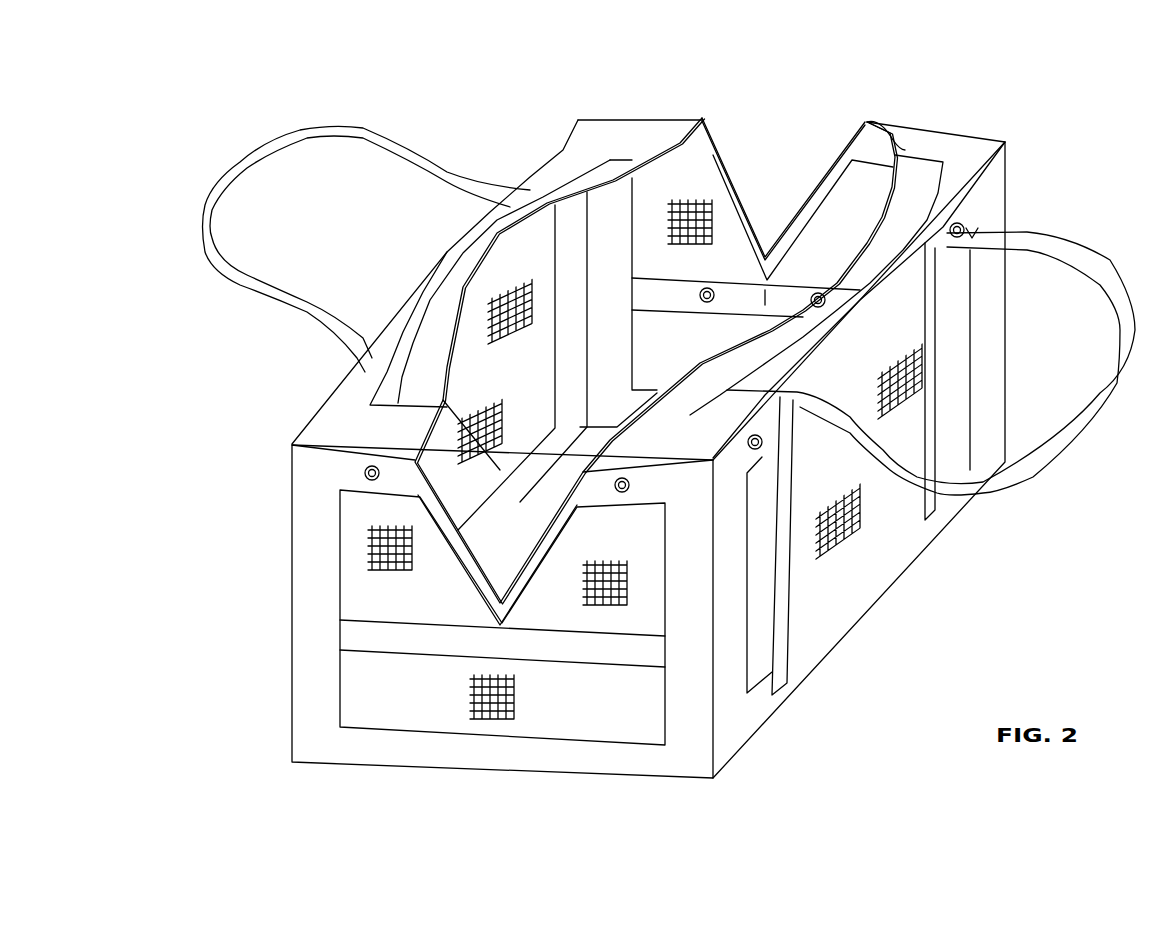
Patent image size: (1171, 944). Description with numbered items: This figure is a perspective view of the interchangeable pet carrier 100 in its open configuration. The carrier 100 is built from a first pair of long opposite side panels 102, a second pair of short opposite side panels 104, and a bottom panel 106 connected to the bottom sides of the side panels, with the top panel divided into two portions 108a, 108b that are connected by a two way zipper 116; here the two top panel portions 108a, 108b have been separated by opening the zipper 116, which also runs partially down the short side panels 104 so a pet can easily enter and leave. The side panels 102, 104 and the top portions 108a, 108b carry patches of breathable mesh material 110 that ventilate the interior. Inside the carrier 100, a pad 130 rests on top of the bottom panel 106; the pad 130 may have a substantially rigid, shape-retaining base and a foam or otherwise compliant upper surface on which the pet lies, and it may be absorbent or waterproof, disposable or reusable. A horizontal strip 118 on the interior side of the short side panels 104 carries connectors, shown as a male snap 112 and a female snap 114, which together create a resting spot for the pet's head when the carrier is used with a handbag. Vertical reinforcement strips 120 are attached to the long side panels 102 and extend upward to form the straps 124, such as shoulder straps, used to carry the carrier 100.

The interchangeable pet carrier 100 is at (1084, 75).
The long opposite side panel 102 is at (742, 725).
The short opposite side panel 104 is at (320, 728).
The bottom panel 106 is at (637, 783).
The top panel portion 108a is at (355, 390).
The top panel portion 108b is at (990, 168).
The breathable mesh material 110 is at (510, 290).
The male snap 112 is at (818, 296).
The female snap 114 is at (365, 473).
The zipper 116 is at (905, 148).
The horizontal strip 118 is at (365, 628).
The vertical reinforcement strip 120 is at (775, 650).
The strap 124 is at (242, 167).
The pad 130 is at (505, 555).